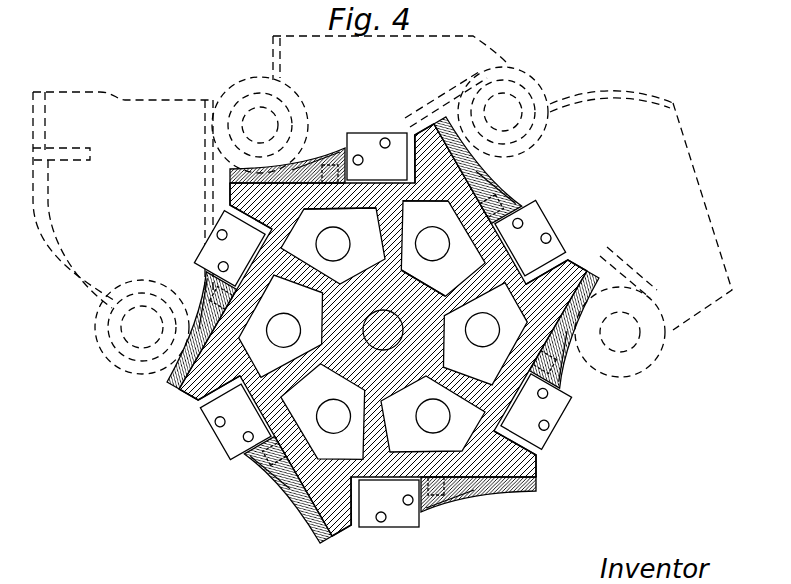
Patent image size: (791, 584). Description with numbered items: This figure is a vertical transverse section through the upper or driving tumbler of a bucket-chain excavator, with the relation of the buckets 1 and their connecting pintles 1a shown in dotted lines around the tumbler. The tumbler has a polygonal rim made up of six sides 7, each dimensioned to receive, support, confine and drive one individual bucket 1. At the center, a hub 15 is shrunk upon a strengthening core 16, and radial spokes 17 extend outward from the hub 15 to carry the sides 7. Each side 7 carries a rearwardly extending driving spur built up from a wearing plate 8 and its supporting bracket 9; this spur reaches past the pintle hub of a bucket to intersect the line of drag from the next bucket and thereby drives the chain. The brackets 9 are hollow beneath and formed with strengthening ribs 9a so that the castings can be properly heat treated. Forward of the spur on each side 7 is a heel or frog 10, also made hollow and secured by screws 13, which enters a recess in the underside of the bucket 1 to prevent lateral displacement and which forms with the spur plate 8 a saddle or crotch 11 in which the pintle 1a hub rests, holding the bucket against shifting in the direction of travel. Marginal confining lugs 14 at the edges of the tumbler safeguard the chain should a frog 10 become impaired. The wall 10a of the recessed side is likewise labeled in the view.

The bucket 1 is at (124, 100).
The pintle 1a is at (515, 100).
The side 7 is at (358, 215).
The wearing plate 8 is at (600, 284).
The supporting bracket 9 is at (581, 263).
The strengthening rib 9a is at (243, 216).
The frog 10 is at (330, 150).
The pocket wall 10a is at (340, 215).
The saddle 11 is at (292, 170).
The screw 13 is at (327, 164).
The confining lug 14 is at (380, 132).
The hub 15 is at (420, 290).
The strengthening core 16 is at (398, 336).
The radial spoke 17 is at (406, 208).